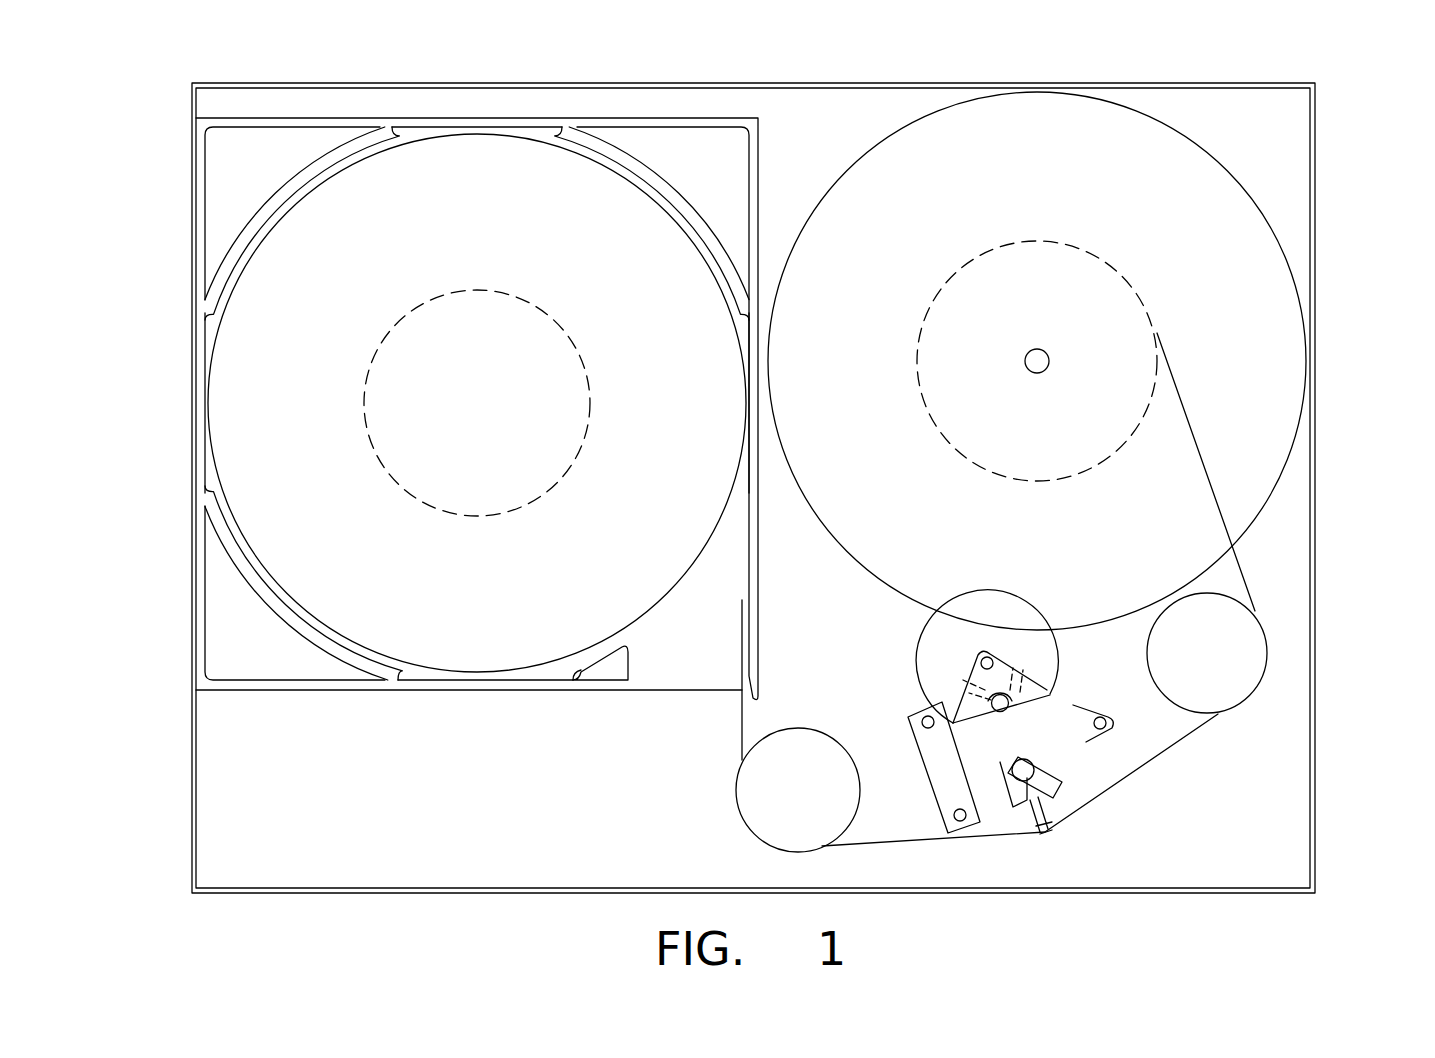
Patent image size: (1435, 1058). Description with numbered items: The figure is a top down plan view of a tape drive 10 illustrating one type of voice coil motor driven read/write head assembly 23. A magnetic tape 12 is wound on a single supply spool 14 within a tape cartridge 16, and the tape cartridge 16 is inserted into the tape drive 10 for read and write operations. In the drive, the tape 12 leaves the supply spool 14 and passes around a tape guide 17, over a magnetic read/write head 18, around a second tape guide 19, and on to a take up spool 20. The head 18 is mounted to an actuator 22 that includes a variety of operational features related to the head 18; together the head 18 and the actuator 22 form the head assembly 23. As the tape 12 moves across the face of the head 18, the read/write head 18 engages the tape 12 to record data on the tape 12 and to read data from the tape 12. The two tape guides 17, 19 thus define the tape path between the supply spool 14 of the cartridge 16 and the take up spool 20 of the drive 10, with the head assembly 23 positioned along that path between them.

The tape drive 10 is at (1343, 106).
The magnetic tape 12 is at (1168, 749).
The supply spool 14 is at (628, 197).
The tape cartridge 16 is at (752, 137).
The tape guide 17 is at (740, 806).
The magnetic read/write head 18 is at (1041, 838).
The tape guide 19 is at (1252, 692).
The take up spool 20 is at (1264, 228).
The actuator 22 is at (899, 758).
The head assembly 23 is at (1088, 834).